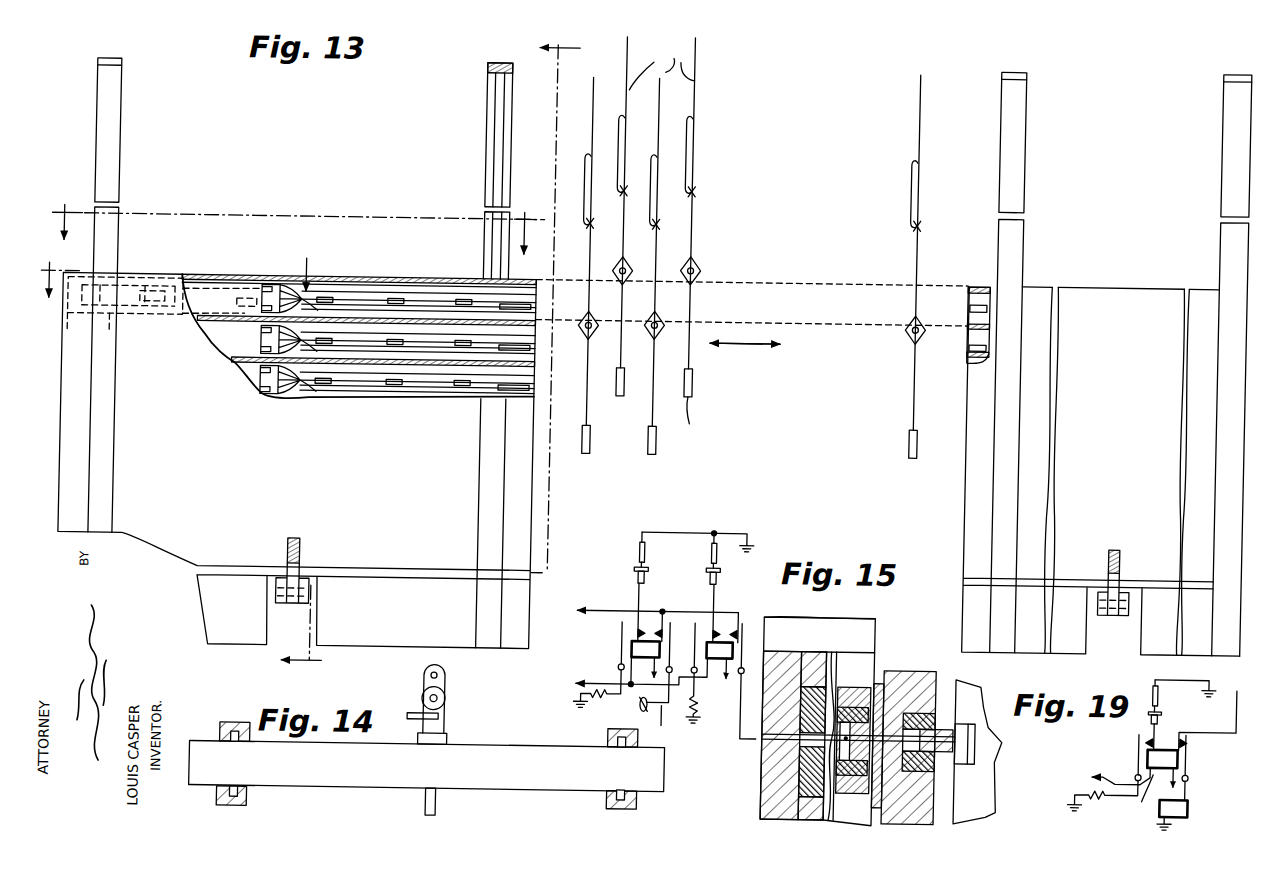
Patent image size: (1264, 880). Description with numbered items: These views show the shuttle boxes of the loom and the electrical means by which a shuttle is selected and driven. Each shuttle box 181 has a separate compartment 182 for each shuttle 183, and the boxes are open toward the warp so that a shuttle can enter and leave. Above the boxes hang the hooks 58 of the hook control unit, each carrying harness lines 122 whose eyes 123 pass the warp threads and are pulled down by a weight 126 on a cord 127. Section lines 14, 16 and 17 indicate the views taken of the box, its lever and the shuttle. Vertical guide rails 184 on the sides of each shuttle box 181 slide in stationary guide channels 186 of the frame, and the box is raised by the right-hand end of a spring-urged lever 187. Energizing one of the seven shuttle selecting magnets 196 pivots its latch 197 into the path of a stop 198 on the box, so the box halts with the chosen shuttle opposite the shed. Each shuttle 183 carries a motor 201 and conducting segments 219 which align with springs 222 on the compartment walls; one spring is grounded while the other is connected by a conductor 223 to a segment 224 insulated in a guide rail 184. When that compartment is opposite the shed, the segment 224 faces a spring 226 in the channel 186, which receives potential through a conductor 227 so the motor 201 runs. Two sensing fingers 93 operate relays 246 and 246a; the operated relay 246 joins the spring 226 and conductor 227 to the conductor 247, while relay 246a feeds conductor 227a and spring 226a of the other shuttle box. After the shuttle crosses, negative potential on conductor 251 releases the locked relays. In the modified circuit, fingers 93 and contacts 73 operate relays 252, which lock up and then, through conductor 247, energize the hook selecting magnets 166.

In FIG. 13, the section line 14- 14 is at (298, 217).
In FIG. 13, the section line 16- 16 is at (443, 356).
In FIG. 13, the section line 17- 17 is at (179, 269).
In FIG. 13, the hook 58 is at (915, 105).
In FIG. 15, the contact 73 is at (704, 578).
In FIG. 19, the contact 73 is at (1166, 730).
In FIG. 15, the sensing finger 93 is at (707, 553).
In FIG. 19, the sensing finger 93 is at (1157, 695).
In FIG. 13, the harness line 122 is at (652, 249).
In FIG. 13, the eye 123 is at (697, 270).
In FIG. 13, the weight 126 is at (656, 445).
In FIG. 13, the cord 127 is at (652, 371).
In FIG. 19, the hook selecting magnet 166 is at (1189, 810).
In FIG. 13, the shuttle box 181 is at (539, 512).
In FIG. 14, the shuttle box 181 is at (534, 730).
In FIG. 15, the shuttle box 181 is at (920, 672).
In FIG. 13, the shuttle compartment 182 is at (351, 293).
In FIG. 13, the shuttle 183 is at (199, 295).
In FIG. 15, the shuttle 183 is at (980, 792).
In FIG. 14, the vertical guide rail 184 is at (252, 755).
In FIG. 15, the vertical guide rail 184 is at (860, 630).
In FIG. 13, the vertical guide channel 186 is at (107, 225).
In FIG. 14, the vertical guide channel 186 is at (228, 728).
In FIG. 15, the vertical guide channel 186 is at (762, 749).
In FIG. 13, the lever 187 is at (295, 545).
In FIG. 14, the shuttle selecting magnet 196 is at (446, 695).
In FIG. 14, the latch 197 is at (445, 673).
In FIG. 14, the stop 198 is at (448, 737).
In FIG. 13, the motor 201 is at (112, 321).
In FIG. 13, the conducting segment 219 is at (230, 340).
In FIG. 15, the conducting segment 219 is at (955, 750).
In FIG. 13, the spring 222 is at (470, 307).
In FIG. 15, the spring 222 is at (942, 732).
In FIG. 15, the conductor 223 is at (880, 690).
In FIG. 15, the segment 224 is at (846, 707).
In FIG. 15, the spring 226 is at (830, 700).
In FIG. 15, the spring 226a is at (644, 712).
In FIG. 15, the conductor 227 is at (742, 710).
In FIG. 15, the conductor 227a is at (664, 728).
In FIG. 15, the relay 246 is at (718, 642).
In FIG. 15, the relay 246a is at (645, 642).
In FIG. 15, the conductor 247 is at (609, 614).
In FIG. 19, the conductor 247 is at (1222, 733).
In FIG. 15, the conductor 251 is at (597, 678).
In FIG. 19, the conductor 251 is at (1107, 776).
In FIG. 19, the relay 252 is at (1130, 797).